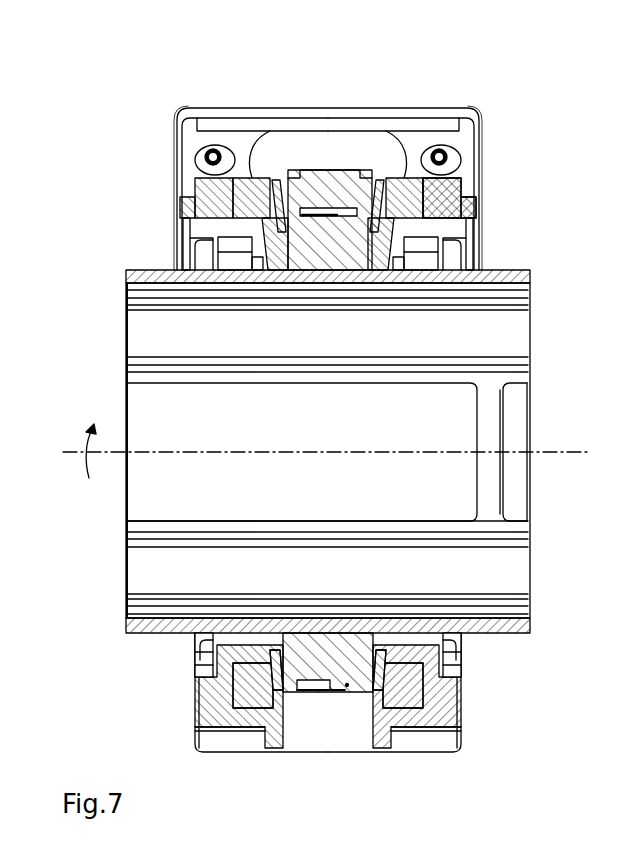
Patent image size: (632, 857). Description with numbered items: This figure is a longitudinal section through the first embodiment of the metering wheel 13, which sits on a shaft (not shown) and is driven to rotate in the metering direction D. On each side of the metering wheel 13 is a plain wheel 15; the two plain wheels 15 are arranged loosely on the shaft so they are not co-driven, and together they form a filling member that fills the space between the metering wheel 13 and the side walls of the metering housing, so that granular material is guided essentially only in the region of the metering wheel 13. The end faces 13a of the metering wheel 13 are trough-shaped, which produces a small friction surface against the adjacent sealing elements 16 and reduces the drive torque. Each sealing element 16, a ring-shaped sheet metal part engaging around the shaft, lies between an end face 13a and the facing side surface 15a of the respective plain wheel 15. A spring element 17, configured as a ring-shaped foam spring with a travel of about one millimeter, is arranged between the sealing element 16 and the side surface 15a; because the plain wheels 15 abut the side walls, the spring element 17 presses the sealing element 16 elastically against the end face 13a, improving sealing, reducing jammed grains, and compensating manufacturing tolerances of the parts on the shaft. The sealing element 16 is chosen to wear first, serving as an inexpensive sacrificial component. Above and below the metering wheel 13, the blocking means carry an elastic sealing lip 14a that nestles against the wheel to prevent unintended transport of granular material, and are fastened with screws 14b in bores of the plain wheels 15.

The metering wheel 13 is at (337, 210).
The end face 13a is at (281, 215).
The sealing lip 14a is at (348, 185).
The screw 14b is at (205, 162).
The plain wheel 15 is at (461, 204).
The side surface 15a is at (408, 199).
The sealing element 16 is at (284, 205).
The spring element 17 is at (253, 180).
The metering direction D is at (89, 478).